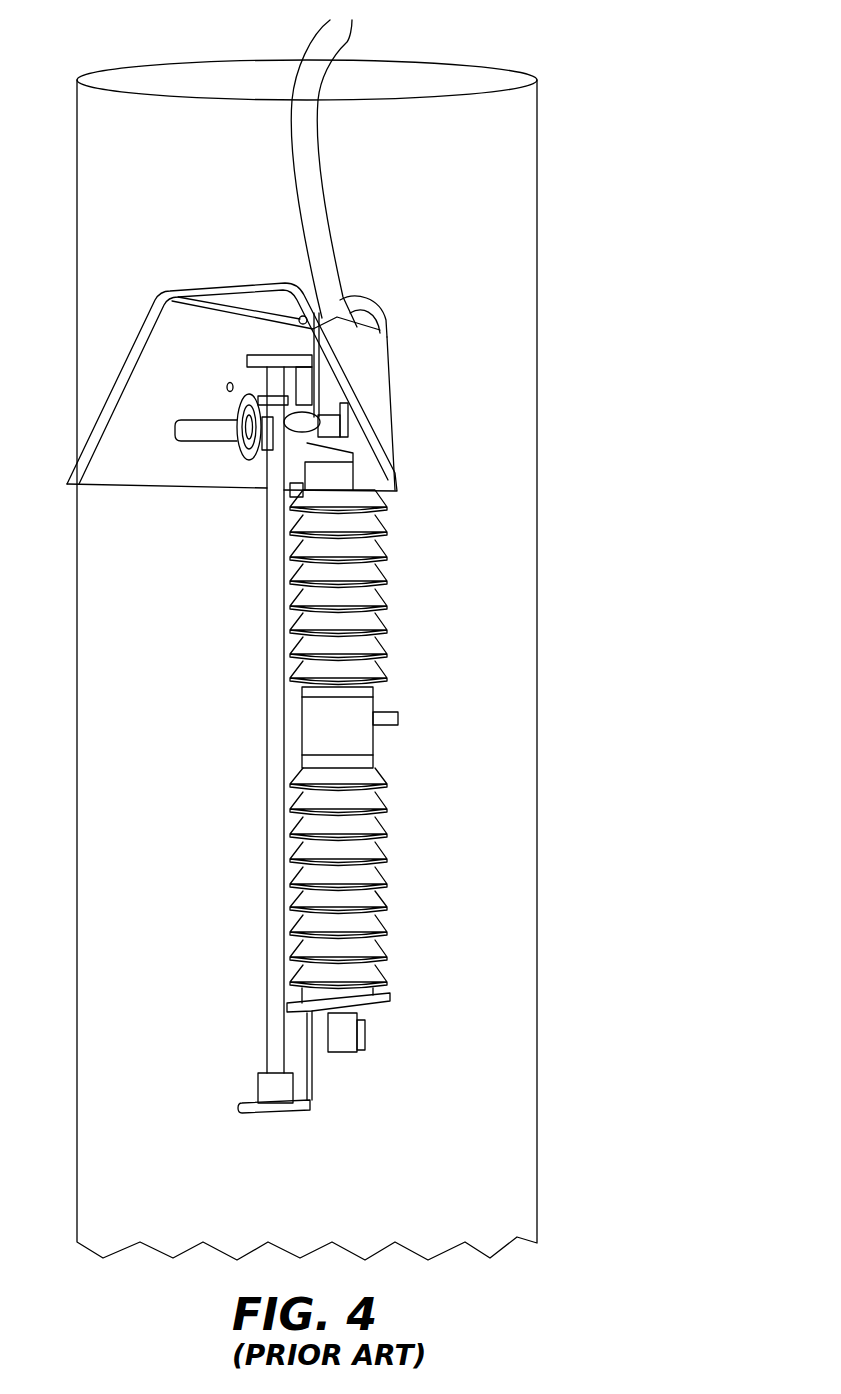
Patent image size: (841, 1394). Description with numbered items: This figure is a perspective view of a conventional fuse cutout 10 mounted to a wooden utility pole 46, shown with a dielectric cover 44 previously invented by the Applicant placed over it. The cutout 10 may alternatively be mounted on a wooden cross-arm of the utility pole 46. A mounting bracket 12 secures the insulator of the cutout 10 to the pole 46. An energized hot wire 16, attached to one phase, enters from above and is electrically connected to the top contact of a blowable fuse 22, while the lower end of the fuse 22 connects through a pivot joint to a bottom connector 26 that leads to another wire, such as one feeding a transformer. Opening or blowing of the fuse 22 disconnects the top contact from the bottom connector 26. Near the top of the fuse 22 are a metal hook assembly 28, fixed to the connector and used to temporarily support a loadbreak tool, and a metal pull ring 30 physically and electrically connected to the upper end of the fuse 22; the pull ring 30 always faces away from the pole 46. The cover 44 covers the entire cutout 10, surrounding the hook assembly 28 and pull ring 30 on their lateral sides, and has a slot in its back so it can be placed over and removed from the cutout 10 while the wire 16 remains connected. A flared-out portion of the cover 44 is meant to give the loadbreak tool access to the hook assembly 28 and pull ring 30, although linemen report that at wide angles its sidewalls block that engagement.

The fuse cutout 10 is at (312, 756).
The mounting bracket 12 is at (398, 723).
The hot wire 16 is at (318, 163).
The blowable fuse 22 is at (272, 798).
The bottom connector 26 is at (365, 1033).
The metal hook assembly 28 is at (213, 417).
The metal pull ring 30 is at (235, 448).
The dielectric cover 44 is at (103, 403).
The wooden utility pole 46 is at (98, 135).